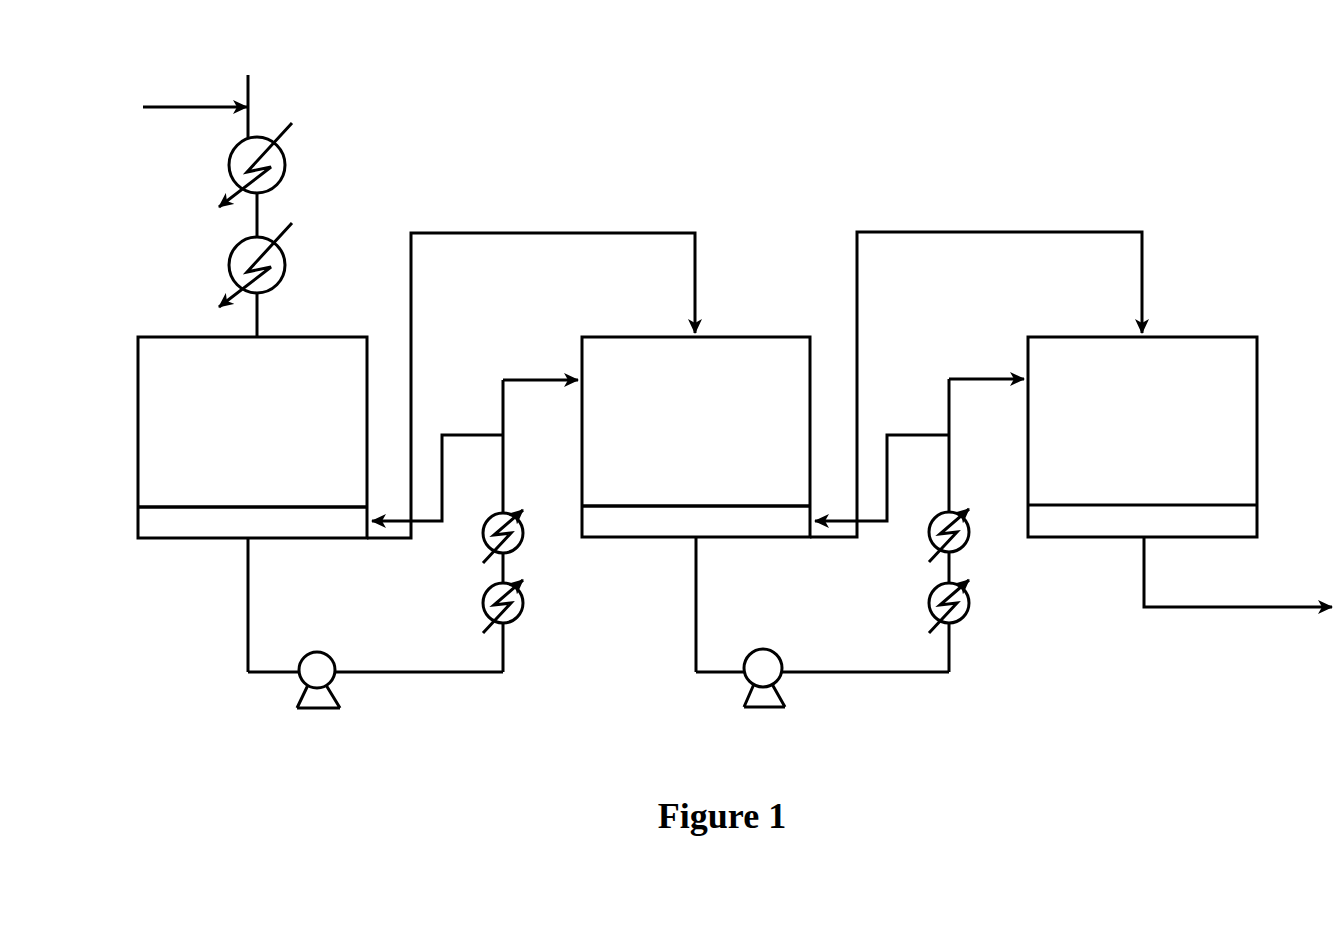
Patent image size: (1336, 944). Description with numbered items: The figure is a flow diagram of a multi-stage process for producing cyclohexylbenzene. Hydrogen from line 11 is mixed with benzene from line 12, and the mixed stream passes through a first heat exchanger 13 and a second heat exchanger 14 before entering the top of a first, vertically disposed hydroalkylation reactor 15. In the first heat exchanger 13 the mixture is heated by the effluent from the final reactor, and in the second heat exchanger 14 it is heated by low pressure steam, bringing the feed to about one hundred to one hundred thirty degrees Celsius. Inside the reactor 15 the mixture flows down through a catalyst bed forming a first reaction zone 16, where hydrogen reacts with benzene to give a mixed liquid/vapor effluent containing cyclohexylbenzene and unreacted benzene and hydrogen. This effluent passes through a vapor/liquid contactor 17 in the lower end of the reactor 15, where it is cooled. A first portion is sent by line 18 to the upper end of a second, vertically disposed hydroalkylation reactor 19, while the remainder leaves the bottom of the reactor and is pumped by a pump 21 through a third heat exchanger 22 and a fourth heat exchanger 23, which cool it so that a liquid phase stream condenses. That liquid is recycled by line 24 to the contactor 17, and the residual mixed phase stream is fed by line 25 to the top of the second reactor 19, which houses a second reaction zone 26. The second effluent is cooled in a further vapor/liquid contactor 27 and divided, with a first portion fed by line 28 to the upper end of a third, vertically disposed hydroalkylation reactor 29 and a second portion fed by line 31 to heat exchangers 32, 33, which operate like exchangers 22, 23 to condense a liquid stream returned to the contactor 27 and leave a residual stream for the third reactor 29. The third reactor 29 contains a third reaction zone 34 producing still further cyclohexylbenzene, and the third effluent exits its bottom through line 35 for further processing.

The hydrogen line 11 is at (252, 97).
The benzene line 12 is at (181, 108).
The first heat exchanger 13 is at (290, 170).
The second heat exchanger 14 is at (290, 268).
The first hydroalkylation reactor 15 is at (136, 408).
The first reaction zone 16 is at (252, 437).
The vapor/liquid contactor 17 is at (137, 520).
The line 18 is at (552, 232).
The second hydroalkylation reactor 19 is at (580, 468).
The pump 21 is at (333, 675).
The third heat exchanger 22 is at (520, 617).
The fourth heat exchanger 23 is at (520, 547).
The recycle line 24 is at (479, 437).
The line 25 is at (542, 381).
The second reaction zone 26 is at (696, 437).
The further vapor/liquid contactor 27 is at (581, 523).
The line 28 is at (957, 232).
The third hydroalkylation reactor 29 is at (1262, 378).
The line 31 is at (870, 673).
The heat exchanger 32 is at (966, 617).
The heat exchanger 33 is at (966, 547).
The third reaction zone 34 is at (1142, 437).
The line 35 is at (1257, 608).